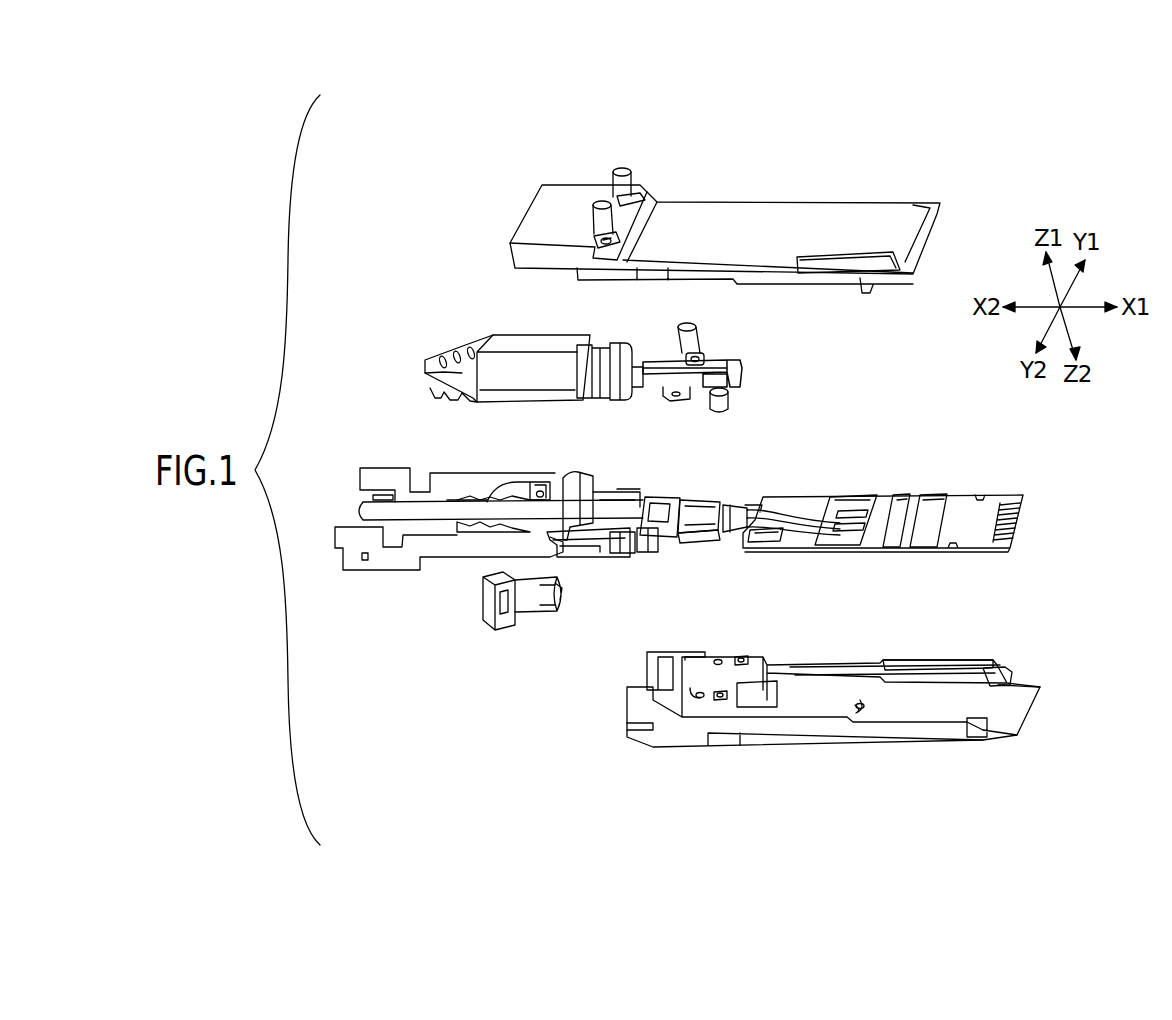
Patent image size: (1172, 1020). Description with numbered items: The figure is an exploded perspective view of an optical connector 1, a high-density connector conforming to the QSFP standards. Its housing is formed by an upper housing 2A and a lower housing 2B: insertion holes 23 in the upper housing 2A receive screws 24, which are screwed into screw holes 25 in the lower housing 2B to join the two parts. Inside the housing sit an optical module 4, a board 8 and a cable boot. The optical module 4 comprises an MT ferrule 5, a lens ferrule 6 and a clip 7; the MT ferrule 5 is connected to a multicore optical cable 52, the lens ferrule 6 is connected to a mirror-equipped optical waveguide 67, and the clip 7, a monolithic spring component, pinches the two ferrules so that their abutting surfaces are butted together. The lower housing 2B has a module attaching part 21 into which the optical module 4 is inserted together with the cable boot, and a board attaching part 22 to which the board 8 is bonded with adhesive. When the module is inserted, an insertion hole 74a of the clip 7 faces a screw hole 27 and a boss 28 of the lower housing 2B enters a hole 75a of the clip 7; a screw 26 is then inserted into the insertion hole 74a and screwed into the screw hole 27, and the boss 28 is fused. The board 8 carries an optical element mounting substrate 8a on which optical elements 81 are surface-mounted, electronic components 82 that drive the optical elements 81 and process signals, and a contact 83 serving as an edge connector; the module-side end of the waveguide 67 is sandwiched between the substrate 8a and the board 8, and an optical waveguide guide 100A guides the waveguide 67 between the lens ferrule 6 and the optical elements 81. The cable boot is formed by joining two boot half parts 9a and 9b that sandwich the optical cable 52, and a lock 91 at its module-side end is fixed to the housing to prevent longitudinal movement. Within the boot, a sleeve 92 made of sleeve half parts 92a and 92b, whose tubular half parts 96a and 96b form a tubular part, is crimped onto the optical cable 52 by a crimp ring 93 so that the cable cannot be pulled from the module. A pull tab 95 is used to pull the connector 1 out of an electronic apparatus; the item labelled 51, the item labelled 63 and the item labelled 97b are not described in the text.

The optical connector 1 is at (964, 121).
The upper housing 2A is at (838, 193).
The lower housing 2B is at (890, 745).
The optical module 4 is at (785, 440).
The MT ferrule 5 is at (676, 500).
The lens ferrule 6 is at (692, 545).
The clip 7 is at (745, 363).
The board 8 is at (940, 480).
The optical element mounting substrate 8a is at (842, 517).
The boot half part 9a is at (456, 353).
The boot half part 9b is at (600, 546).
The module attaching part 21 is at (800, 666).
The board attaching part 22 is at (933, 690).
The insertion holes 23 is at (640, 225).
The screws 24 is at (598, 230).
The screw holes 25 is at (750, 660).
The screw 26 is at (680, 327).
The screw hole 27 is at (722, 660).
The boss 28 is at (700, 700).
The connector body 51 is at (650, 500).
The optical cable 52 is at (406, 506).
The connector tip 63 is at (736, 505).
The mirror-equipped optical waveguide 67 is at (815, 525).
The insertion hole 74a is at (703, 358).
The hole 75a is at (668, 399).
The optical elements 81 is at (857, 512).
The electronic components 82 is at (921, 530).
The contact 83 is at (1030, 518).
The lock 91 is at (612, 343).
The sleeve 92 is at (489, 613).
The sleeve half part 92a is at (492, 500).
The sleeve half part 92b is at (533, 598).
The crimp ring 93 is at (578, 500).
The pull tab 95 is at (435, 570).
The tubular half part 96a is at (560, 477).
The tubular half part 96b is at (548, 606).
The holder block 97b is at (575, 546).
The optical waveguide guide 100A is at (790, 540).